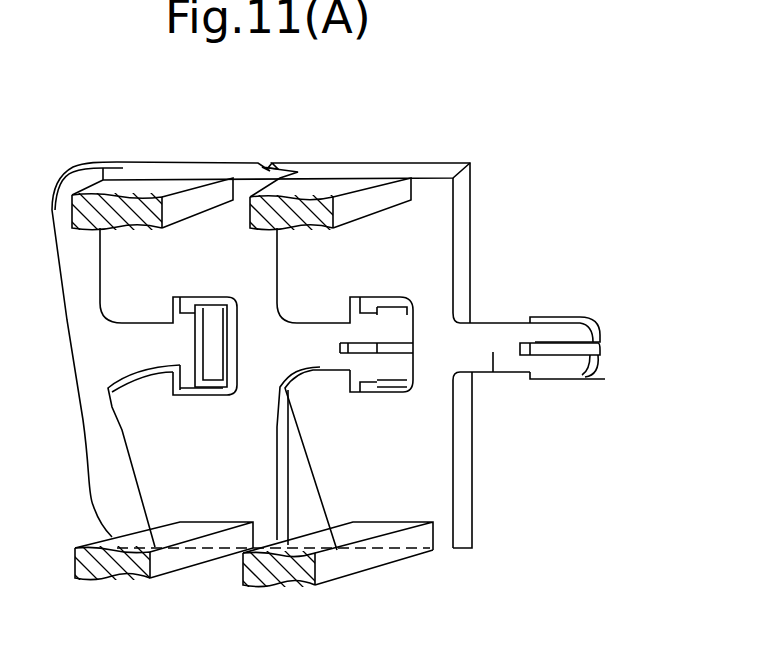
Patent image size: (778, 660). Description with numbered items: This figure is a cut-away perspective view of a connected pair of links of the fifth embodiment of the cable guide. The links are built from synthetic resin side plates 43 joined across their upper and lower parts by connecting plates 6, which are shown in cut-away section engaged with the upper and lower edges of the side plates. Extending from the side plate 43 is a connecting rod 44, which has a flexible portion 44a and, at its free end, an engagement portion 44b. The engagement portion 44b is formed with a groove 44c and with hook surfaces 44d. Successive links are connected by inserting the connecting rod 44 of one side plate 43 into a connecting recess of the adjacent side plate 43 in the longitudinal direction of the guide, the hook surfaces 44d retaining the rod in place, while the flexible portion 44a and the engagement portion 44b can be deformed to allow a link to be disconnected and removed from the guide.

The connecting plate 6 is at (320, 188).
The side plate 43 is at (440, 203).
The connecting rod 44 is at (577, 344).
The flexible portion 44a is at (493, 372).
The engagement portion 44b is at (578, 325).
The groove 44c is at (555, 347).
The hook surfaces 44d is at (530, 380).